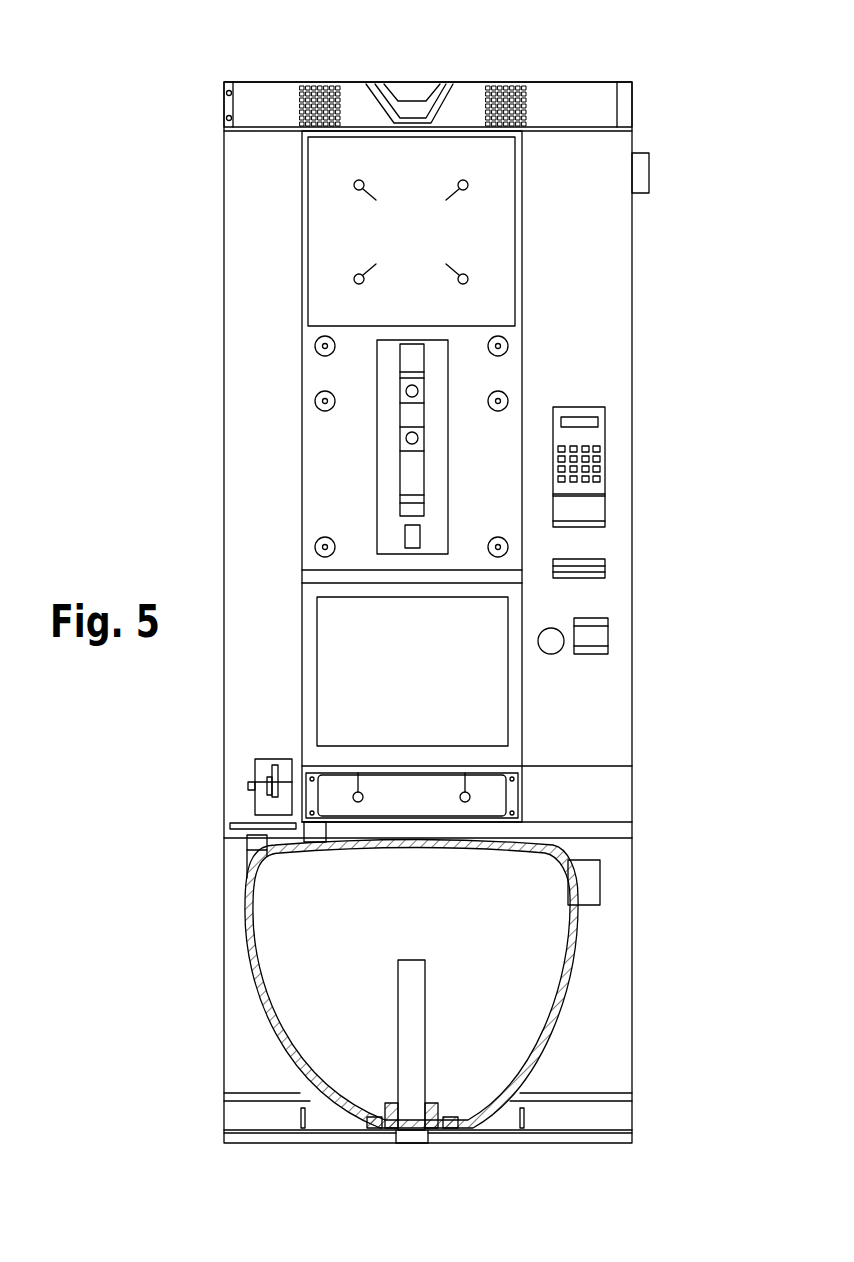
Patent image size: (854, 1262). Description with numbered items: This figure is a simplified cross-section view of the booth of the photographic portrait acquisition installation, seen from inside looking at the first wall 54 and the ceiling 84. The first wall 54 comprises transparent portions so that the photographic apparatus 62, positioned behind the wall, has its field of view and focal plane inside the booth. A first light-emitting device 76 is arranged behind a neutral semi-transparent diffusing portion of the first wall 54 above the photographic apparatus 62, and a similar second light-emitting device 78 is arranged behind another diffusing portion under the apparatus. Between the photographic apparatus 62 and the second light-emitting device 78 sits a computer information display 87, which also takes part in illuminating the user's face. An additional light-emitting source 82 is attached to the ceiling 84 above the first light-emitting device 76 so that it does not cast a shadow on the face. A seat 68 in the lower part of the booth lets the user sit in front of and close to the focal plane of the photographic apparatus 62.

The first wall 54 is at (593, 197).
The ceiling 84 is at (564, 95).
The light-emitting source 82 is at (448, 82).
The first light-emitting device 76 is at (495, 242).
The photographic apparatus 62 is at (437, 455).
The computer information display 87 is at (467, 653).
The second light-emitting device 78 is at (486, 793).
The seat 68 is at (533, 976).